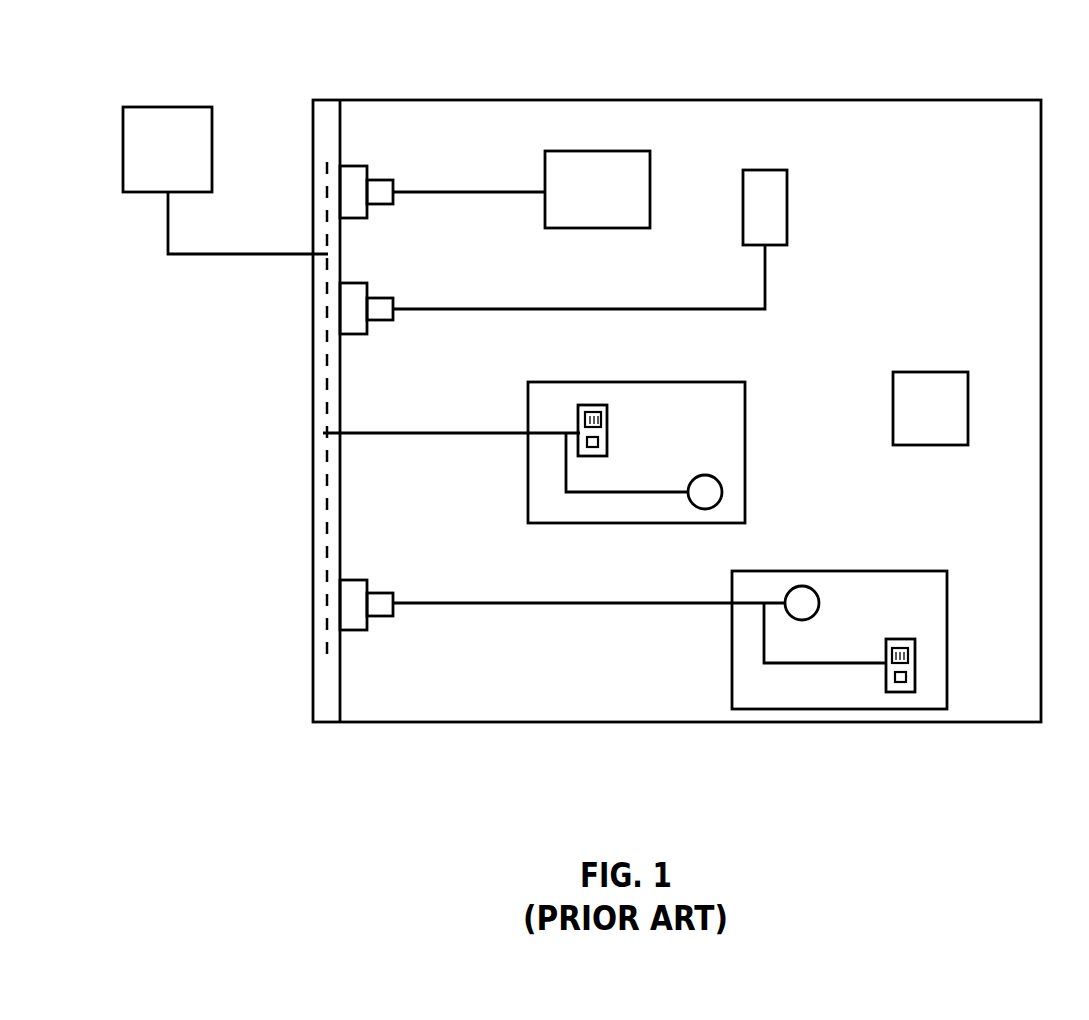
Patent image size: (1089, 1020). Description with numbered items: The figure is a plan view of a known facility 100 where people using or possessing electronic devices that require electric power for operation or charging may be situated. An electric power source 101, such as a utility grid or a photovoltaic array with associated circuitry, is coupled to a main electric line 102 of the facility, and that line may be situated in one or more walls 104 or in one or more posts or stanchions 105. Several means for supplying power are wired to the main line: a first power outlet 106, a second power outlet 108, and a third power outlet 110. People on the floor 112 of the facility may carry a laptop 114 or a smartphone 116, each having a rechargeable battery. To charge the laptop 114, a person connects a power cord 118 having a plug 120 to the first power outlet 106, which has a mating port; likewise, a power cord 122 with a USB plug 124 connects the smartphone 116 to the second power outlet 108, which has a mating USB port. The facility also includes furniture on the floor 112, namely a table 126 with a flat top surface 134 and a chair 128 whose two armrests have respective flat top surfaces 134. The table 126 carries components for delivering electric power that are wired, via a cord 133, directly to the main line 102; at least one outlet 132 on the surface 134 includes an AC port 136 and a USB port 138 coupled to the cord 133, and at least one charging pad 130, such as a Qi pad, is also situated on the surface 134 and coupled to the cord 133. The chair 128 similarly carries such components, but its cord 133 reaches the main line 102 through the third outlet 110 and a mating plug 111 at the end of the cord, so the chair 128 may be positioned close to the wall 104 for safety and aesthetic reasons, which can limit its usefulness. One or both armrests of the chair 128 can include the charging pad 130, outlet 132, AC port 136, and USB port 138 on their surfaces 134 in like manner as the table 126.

The facility 100 is at (952, 50).
The electric power source 101 is at (187, 161).
The main electric line 102 is at (327, 526).
The wall 104 is at (327, 723).
The post/stanchion 105 is at (893, 393).
The first power outlet 106 is at (355, 165).
The second power outlet 108 is at (348, 282).
The third power outlet 110 is at (352, 578).
The mating plug 111 is at (379, 617).
The floor 112 is at (950, 294).
The laptop 114 is at (630, 228).
The smartphone 116 is at (762, 170).
The power cord 118 is at (450, 190).
The plug 120 is at (377, 178).
The power cord 122 is at (457, 308).
The USB plug 124 is at (382, 321).
The table 126 is at (528, 472).
The chair 128 is at (732, 658).
The charging pad 130 is at (718, 480).
The outlet 132 is at (593, 410).
The cord 133 is at (455, 432).
The flat top surface 134 is at (727, 434).
The AC port 136 is at (603, 417).
The USB port 138 is at (600, 441).